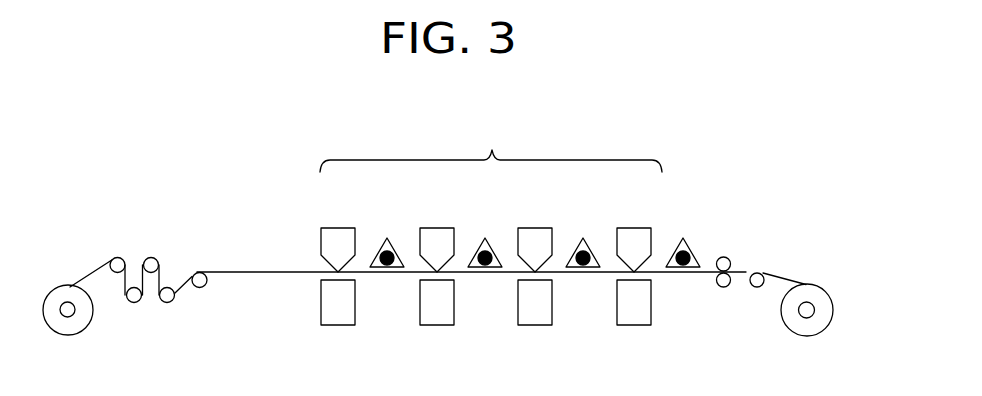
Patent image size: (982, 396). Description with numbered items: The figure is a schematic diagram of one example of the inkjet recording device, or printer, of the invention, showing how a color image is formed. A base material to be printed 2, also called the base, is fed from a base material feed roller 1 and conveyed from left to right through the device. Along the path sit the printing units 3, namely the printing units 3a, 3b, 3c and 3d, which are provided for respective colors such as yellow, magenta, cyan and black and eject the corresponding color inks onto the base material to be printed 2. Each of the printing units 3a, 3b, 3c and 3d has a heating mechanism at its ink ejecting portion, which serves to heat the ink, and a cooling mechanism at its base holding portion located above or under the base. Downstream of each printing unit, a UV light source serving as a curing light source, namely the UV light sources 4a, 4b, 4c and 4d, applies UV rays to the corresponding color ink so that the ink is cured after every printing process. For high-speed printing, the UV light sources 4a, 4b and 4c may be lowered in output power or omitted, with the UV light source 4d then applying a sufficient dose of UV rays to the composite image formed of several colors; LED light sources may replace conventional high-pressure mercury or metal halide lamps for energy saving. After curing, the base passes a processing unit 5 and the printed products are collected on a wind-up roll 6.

The base material feed roller 1 is at (76, 311).
The base material to be printed 2 is at (233, 271).
The printing units 3 is at (492, 147).
The printing unit 3a is at (337, 235).
The printing unit 3b is at (436, 235).
The printing unit 3c is at (534, 235).
The printing unit 3d is at (633, 235).
The UV light source 4a is at (387, 238).
The UV light source 4b is at (485, 238).
The UV light source 4c is at (583, 238).
The UV light source 4d is at (683, 238).
The processing unit 5 is at (736, 257).
The wind-up roll 6 is at (805, 310).